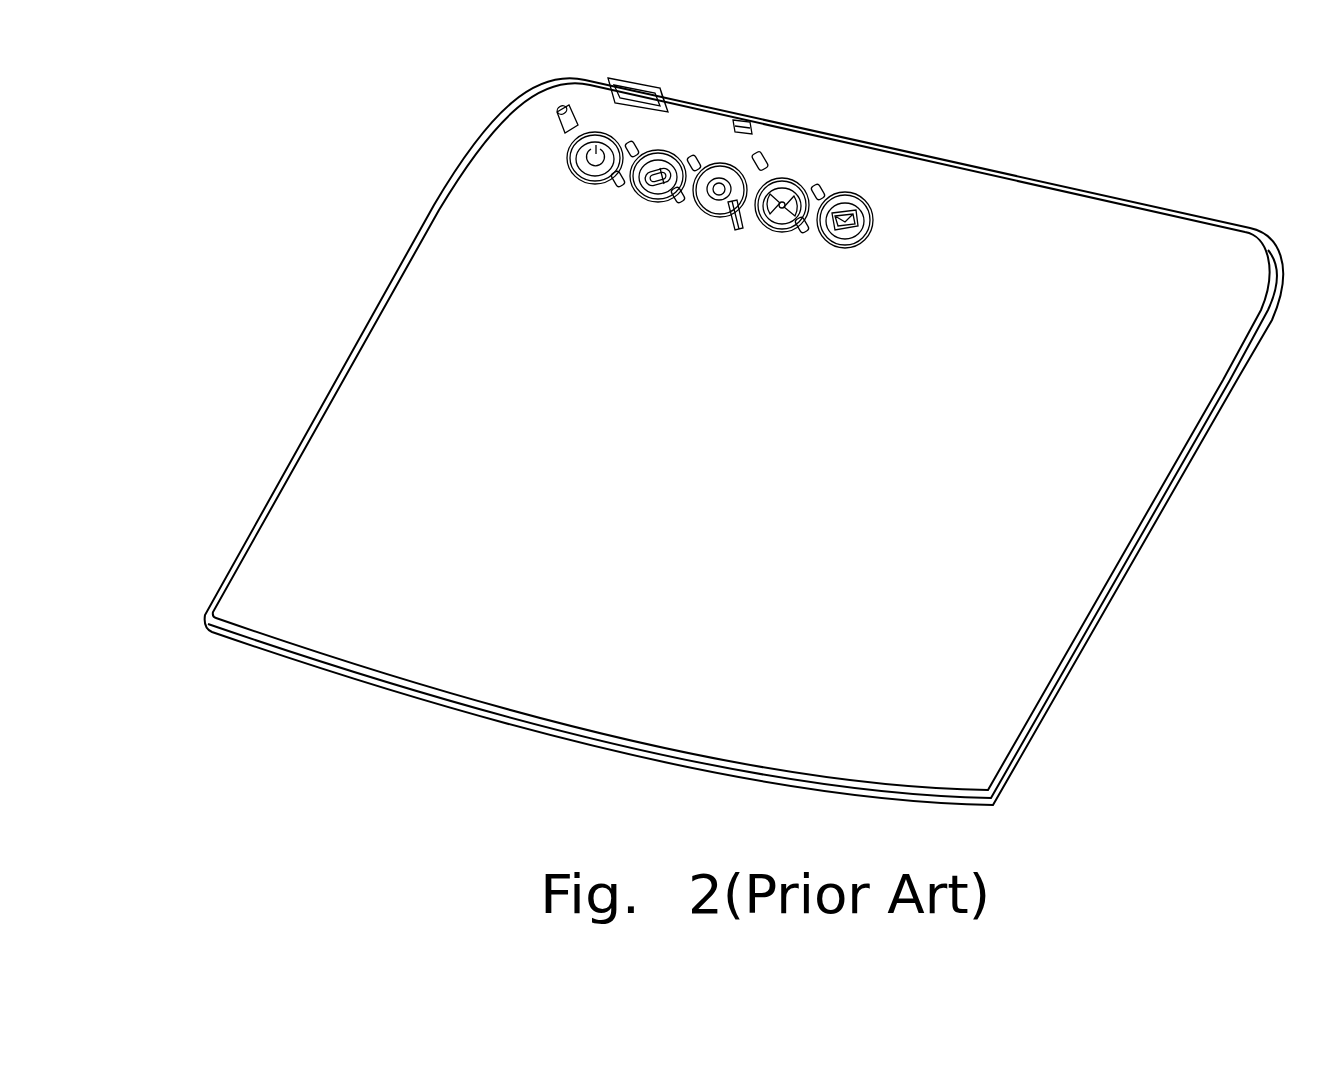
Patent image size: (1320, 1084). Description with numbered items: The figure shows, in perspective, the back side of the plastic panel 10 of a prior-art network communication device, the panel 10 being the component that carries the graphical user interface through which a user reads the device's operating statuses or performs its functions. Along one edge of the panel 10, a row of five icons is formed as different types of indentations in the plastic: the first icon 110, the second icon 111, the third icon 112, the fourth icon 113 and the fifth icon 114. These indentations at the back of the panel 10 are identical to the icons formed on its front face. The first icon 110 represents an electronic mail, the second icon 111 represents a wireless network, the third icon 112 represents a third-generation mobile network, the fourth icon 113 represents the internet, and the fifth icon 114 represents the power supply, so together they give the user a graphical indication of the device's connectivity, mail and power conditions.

The panel 10 is at (1190, 450).
The first icon 110 is at (857, 233).
The second icon 111 is at (780, 182).
The third icon 112 is at (717, 212).
The fourth icon 113 is at (642, 195).
The fifth icon 114 is at (568, 148).